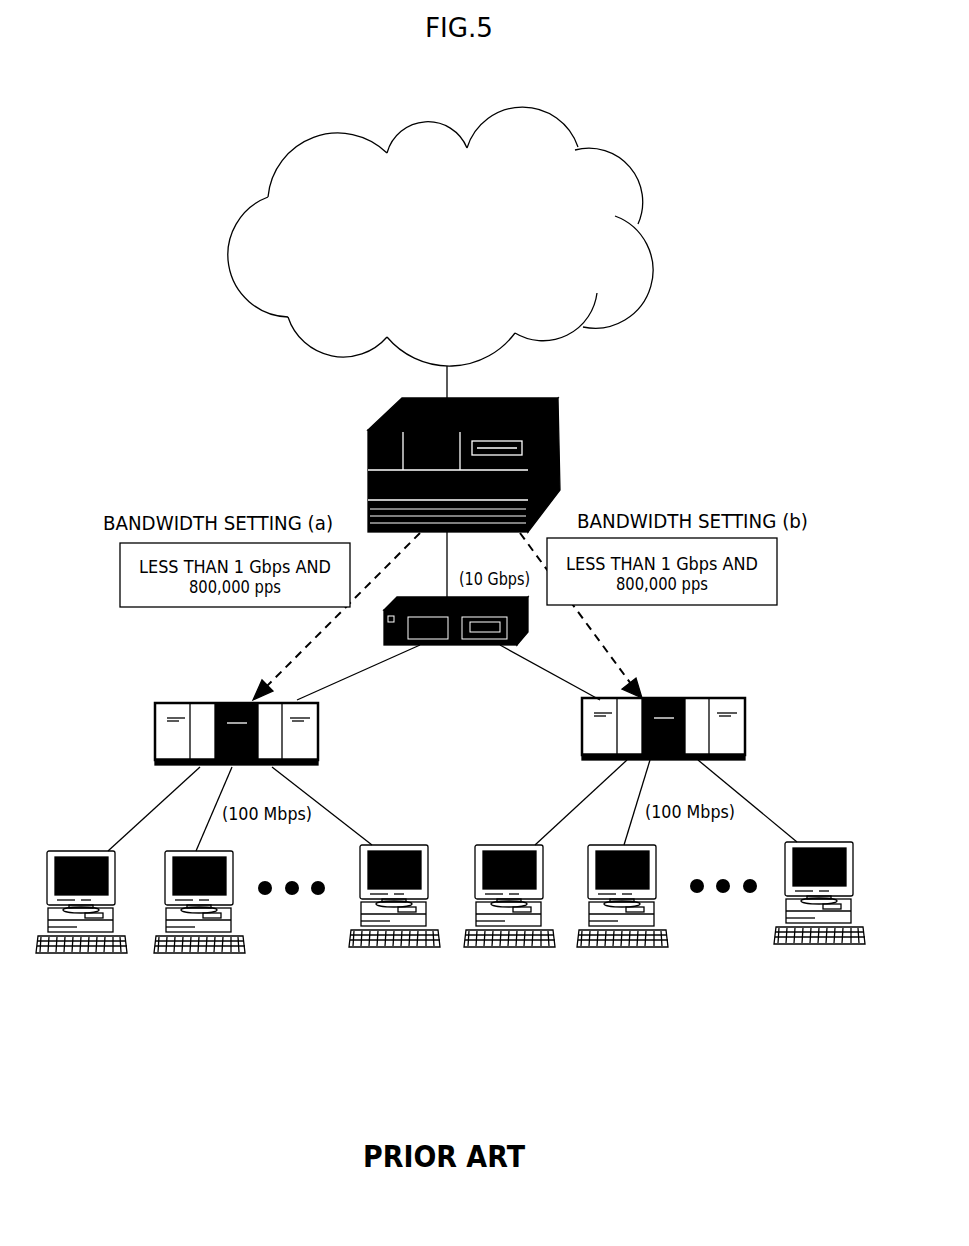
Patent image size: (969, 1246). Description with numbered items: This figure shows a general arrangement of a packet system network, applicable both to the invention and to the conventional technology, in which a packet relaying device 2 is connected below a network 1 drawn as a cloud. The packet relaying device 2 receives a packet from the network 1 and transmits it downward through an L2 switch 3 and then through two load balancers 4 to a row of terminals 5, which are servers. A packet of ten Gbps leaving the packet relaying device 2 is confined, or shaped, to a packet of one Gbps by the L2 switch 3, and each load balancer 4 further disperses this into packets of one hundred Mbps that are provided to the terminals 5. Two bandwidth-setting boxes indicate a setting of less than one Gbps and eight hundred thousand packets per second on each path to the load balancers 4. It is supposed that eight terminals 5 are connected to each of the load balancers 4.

The network 1 is at (633, 171).
The packet relaying device 2 is at (566, 412).
The L2 switch 3 is at (457, 645).
The load balancers 4 is at (434, 704).
The terminals 5 is at (450, 951).